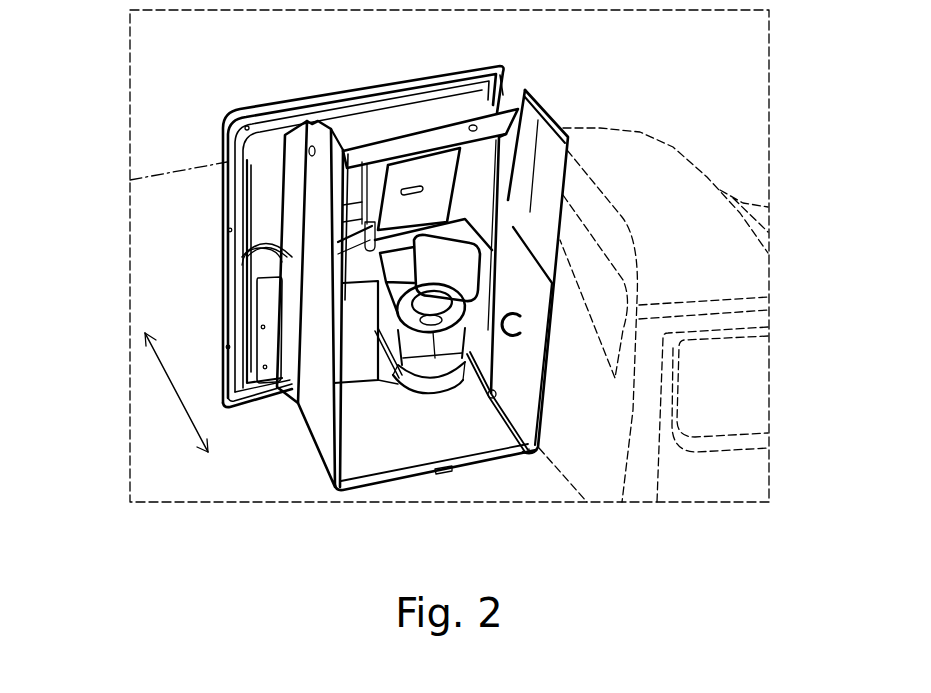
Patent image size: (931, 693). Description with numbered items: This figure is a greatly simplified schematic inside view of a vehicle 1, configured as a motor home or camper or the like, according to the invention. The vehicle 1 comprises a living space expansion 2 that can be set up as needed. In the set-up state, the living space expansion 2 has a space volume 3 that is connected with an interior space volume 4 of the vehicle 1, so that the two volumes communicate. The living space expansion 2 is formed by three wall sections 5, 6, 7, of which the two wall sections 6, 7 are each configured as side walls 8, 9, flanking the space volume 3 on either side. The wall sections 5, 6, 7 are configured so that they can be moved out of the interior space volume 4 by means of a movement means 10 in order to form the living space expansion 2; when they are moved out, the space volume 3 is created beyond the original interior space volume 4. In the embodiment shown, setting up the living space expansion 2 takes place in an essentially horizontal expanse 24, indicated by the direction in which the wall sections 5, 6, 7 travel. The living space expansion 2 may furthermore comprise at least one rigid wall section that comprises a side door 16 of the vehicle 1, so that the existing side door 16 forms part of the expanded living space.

The vehicle 1 is at (785, 167).
The living space expansion 2 is at (427, 253).
The space volume 3 is at (358, 318).
The interior space volume 4 is at (255, 477).
The wall section 5 is at (371, 127).
The wall section 6 is at (292, 200).
The wall section 7 is at (522, 100).
The side wall 8 is at (276, 174).
The side wall 9 is at (505, 99).
The movement means 10 is at (513, 447).
The side door 16 is at (228, 239).
The horizontal expanse 24 is at (165, 372).